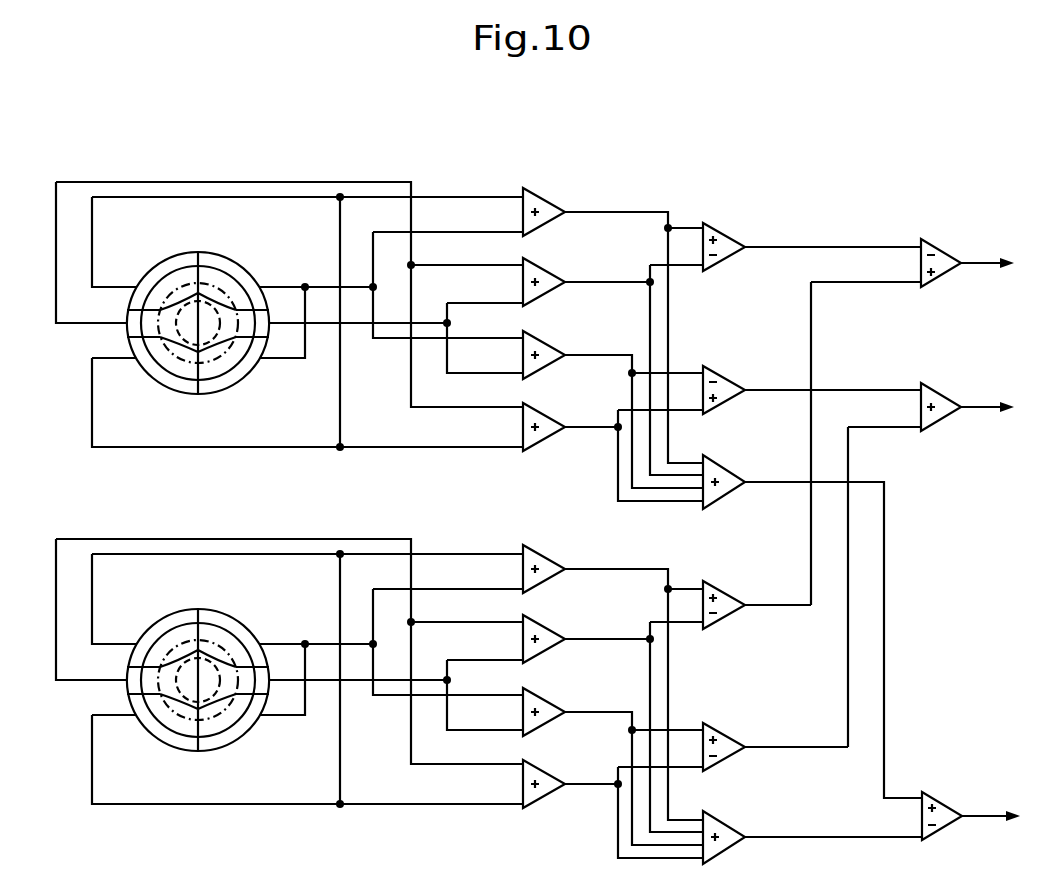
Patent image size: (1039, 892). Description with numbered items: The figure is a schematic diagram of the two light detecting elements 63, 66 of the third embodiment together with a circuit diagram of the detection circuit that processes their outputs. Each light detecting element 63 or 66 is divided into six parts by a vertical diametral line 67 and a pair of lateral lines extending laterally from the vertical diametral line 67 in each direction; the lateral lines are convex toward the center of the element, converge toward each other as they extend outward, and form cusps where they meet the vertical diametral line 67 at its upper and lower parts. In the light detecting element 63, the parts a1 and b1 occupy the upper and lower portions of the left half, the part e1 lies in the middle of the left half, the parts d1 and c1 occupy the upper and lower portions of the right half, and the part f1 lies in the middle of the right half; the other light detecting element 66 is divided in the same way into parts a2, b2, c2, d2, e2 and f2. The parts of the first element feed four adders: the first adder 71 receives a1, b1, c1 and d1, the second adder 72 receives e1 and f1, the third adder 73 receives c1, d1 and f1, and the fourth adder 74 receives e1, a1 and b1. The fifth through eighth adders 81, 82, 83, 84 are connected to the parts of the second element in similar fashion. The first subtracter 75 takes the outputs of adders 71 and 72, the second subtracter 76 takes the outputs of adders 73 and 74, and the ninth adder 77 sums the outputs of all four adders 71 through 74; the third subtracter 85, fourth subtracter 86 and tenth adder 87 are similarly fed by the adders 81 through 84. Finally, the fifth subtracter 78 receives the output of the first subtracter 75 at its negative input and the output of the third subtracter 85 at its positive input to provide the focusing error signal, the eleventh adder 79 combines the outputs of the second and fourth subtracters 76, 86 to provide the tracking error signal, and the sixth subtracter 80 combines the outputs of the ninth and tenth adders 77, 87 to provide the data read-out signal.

The light detecting element 63 is at (202, 233).
The light detecting element 66 is at (202, 590).
The vertical diametral line 67 is at (200, 387).
The part a1 is at (168, 265).
The part b1 is at (155, 377).
The part c1 is at (237, 377).
The part d1 is at (220, 258).
The part e1 is at (128, 327).
The part f1 is at (270, 313).
The part a2 is at (168, 622).
The part b2 is at (155, 734).
The part c2 is at (237, 734).
The part d2 is at (220, 615).
The part e2 is at (128, 684).
The part f2 is at (270, 670).
The first adder 71 is at (548, 205).
The second adder 72 is at (548, 275).
The third adder 73 is at (548, 348).
The fourth adder 74 is at (548, 422).
The first subtracter 75 is at (730, 240).
The second subtracter 76 is at (727, 385).
The ninth adder 77 is at (727, 470).
The fifth subtracter 78 is at (947, 250).
The eleventh adder 79 is at (945, 393).
The sixth subtracter 80 is at (952, 800).
The fifth adder 81 is at (548, 562).
The sixth adder 82 is at (548, 636).
The seventh adder 83 is at (548, 707).
The eighth adder 84 is at (548, 779).
The third subtracter 85 is at (727, 598).
The fourth subtracter 86 is at (730, 744).
The tenth adder 87 is at (733, 830).